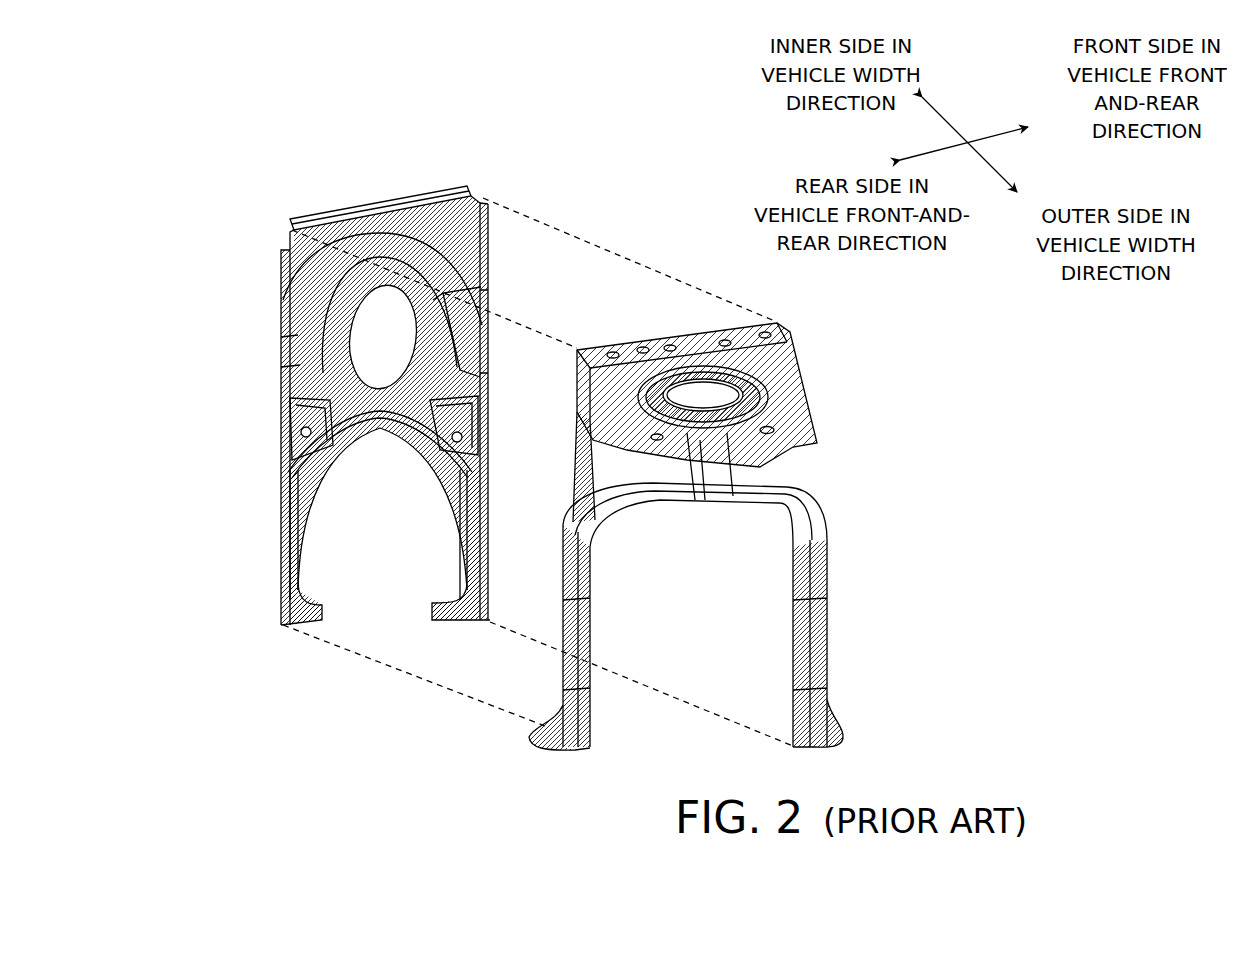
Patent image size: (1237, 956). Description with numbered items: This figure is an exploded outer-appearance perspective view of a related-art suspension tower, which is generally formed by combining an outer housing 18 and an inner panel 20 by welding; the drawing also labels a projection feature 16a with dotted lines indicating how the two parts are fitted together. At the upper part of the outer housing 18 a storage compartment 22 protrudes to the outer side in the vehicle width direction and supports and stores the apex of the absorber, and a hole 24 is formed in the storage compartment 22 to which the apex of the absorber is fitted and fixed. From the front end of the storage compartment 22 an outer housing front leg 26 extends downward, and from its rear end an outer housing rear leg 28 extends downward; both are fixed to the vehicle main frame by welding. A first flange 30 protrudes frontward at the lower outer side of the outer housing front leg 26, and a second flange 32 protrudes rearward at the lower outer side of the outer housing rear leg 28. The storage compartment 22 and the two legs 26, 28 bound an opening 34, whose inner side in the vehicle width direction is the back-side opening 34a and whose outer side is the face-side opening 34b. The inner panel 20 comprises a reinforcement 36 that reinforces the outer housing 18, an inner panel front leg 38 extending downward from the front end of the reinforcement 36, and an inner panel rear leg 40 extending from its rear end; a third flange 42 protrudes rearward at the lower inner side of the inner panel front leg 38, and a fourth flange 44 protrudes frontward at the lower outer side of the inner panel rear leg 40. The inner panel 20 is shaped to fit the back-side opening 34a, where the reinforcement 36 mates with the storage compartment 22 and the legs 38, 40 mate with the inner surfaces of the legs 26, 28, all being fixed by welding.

The virtual plane / projection lines 16a is at (594, 226).
The outer housing 18 is at (850, 455).
The inner panel 20 is at (242, 379).
The storage compartment 22 is at (812, 347).
The hole 24 is at (784, 358).
The outer housing front leg 26 is at (820, 610).
The outer housing rear leg 28 is at (588, 612).
The first flange 30 is at (832, 728).
The second flange 32 is at (558, 722).
The opening 34 is at (744, 596).
The back-side opening 34a is at (695, 511).
The face-side opening 34b is at (691, 523).
The reinforcement 36 is at (292, 276).
The inner panel front leg 38 is at (476, 540).
The inner panel rear leg 40 is at (284, 558).
The third flange 42 is at (462, 607).
The fourth flange 44 is at (286, 612).